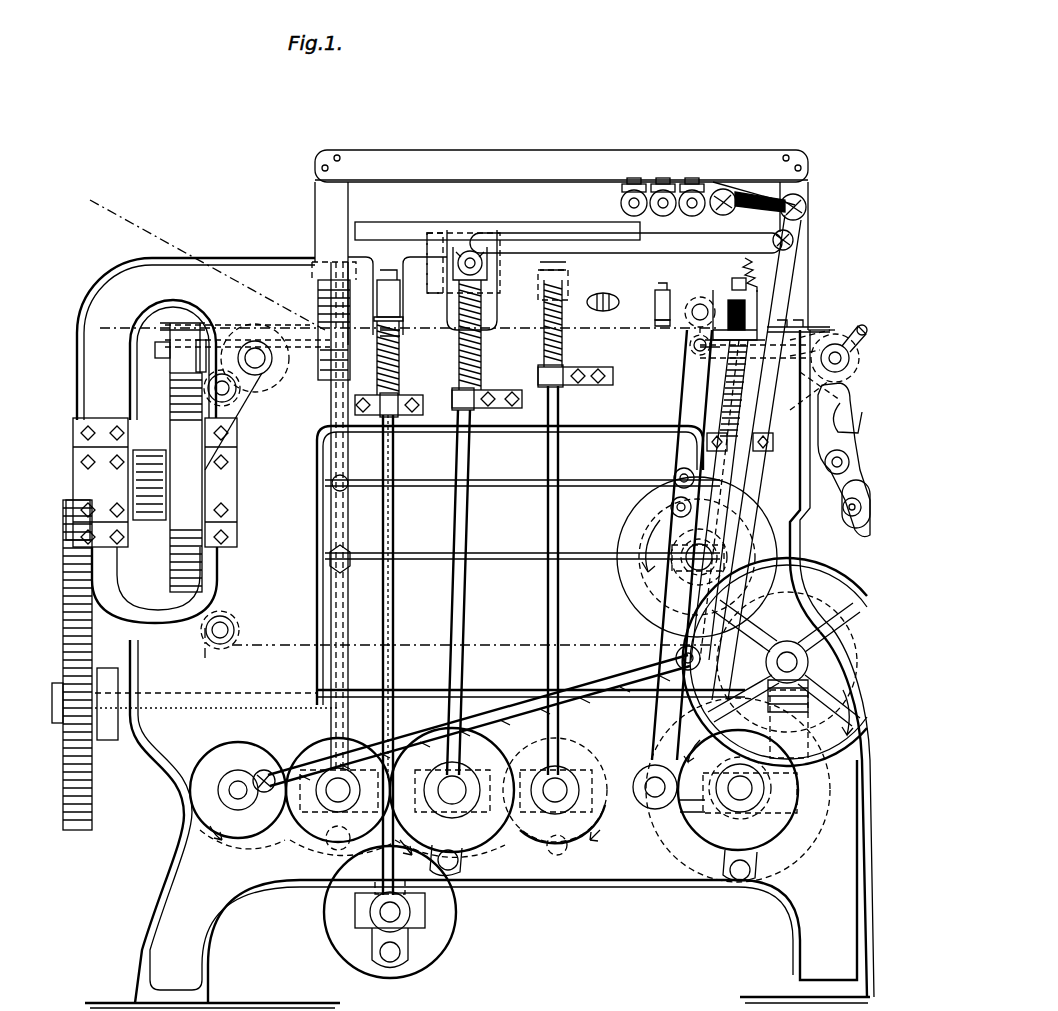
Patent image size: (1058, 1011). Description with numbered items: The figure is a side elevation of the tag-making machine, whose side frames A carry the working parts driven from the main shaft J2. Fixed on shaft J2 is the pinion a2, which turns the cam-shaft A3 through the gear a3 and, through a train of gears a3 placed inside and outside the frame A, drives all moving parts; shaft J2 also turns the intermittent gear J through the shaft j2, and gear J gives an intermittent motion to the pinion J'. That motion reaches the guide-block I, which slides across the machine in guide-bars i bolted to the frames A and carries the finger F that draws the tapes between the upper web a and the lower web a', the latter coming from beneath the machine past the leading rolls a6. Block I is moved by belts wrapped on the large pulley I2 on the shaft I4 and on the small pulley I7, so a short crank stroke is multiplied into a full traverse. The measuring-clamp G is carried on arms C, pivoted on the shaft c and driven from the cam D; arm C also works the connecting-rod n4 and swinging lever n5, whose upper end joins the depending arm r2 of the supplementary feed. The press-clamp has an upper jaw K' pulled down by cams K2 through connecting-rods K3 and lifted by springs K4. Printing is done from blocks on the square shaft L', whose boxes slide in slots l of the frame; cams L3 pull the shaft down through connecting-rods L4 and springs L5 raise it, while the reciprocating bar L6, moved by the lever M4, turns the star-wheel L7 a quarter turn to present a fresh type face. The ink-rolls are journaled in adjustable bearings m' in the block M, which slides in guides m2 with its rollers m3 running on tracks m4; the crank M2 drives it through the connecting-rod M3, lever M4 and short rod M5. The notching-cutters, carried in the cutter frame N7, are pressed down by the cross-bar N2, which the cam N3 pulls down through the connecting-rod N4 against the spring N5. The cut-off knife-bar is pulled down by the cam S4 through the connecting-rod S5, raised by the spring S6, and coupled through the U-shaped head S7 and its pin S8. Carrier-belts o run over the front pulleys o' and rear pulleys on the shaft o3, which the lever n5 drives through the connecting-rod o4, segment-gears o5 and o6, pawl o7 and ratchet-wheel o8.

The side frame A is at (165, 762).
The guides m2 is at (476, 162).
The upper layer of material a is at (299, 380).
The pulley shaft I4 is at (73, 470).
The smaller pulley I7 is at (150, 450).
The larger pulley I2 is at (170, 565).
The guide-block I is at (160, 345).
The guide-bars i is at (196, 355).
The intermittent gear J is at (85, 666).
The pinion J' is at (63, 510).
The supporting-arm C is at (317, 600).
The connecting-rod n4 is at (485, 482).
The shaft j2 is at (492, 690).
The tracks m4 is at (482, 222).
The reciprocating bar L6 is at (655, 255).
The reciprocating block M is at (632, 186).
The vertically-adjustable bearings m' is at (678, 165).
The rollers m3 is at (700, 186).
The short connecting-rod M5 is at (770, 200).
The lever M4 is at (775, 283).
The square shaft L' is at (472, 257).
The star-wheel L7 is at (450, 250).
The upper jaw of press-clamp K' is at (402, 295).
The slots l is at (455, 308).
The cross-bar N2 is at (554, 280).
The swinging lever n5 is at (603, 300).
The open spiral spring N5 is at (605, 325).
The cutter frame N7 is at (655, 310).
The depending arm r2 is at (692, 320).
The U-shaped head S7 is at (757, 305).
The pin S8 is at (760, 290).
The open spiral spring S6 is at (719, 500).
The connecting-rod S5 is at (735, 485).
The carrier-belts o is at (579, 428).
The front pulleys o' is at (233, 393).
The pawl o7 is at (841, 337).
The segment-gear o5 is at (849, 422).
The connecting-rod o4 is at (835, 520).
The ratchet-wheel o8 is at (835, 360).
The shaft o3 is at (836, 330).
The segment o6 is at (830, 378).
The measuring-clamp G is at (318, 290).
The finger F is at (232, 328).
The leading rolls a6 is at (240, 402).
The lower layer of material a' is at (229, 596).
The open spiral springs K4 is at (400, 356).
The connecting-rods K3 is at (394, 530).
The open spiral springs L5 is at (483, 352).
The connecting-rods L4 is at (462, 632).
The connecting-rod N4 is at (548, 592).
The cam D is at (655, 520).
The cam-shaft A3 is at (668, 562).
The main shaft J2 is at (797, 652).
The pinion a2 is at (808, 712).
The connecting-rod M3 is at (612, 682).
The crank M2 is at (245, 830).
The shaft c is at (318, 822).
The cams L3 is at (500, 898).
The cam N3 is at (580, 770).
The cam S4 is at (785, 830).
The cams K2 is at (360, 925).
The gear a3 is at (290, 775).